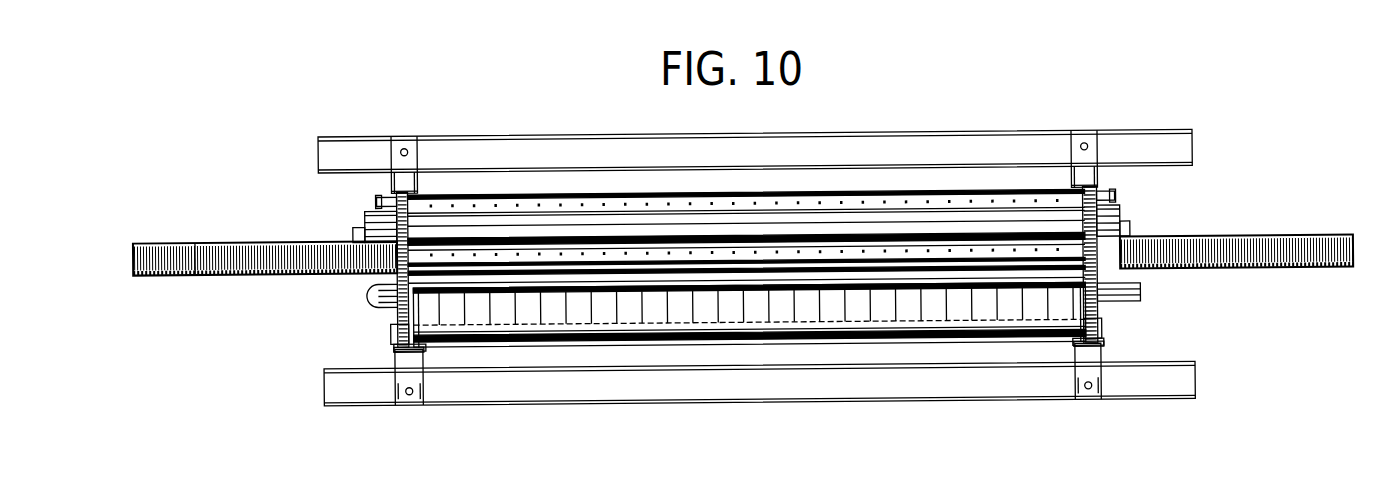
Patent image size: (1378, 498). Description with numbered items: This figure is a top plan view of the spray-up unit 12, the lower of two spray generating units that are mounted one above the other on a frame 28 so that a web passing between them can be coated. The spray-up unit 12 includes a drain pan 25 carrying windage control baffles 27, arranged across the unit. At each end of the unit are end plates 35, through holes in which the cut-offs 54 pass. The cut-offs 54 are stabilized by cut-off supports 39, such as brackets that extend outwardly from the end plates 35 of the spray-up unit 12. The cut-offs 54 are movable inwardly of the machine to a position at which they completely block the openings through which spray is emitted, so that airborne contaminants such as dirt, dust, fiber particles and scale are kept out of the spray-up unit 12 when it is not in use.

The spray-up unit 12 is at (1062, 84).
The drain pan 25 is at (488, 338).
The windage control baffles 27 is at (617, 315).
The frame 28 is at (897, 140).
The end plates 35 is at (392, 325).
The cut-off supports 39 is at (230, 277).
The cut-offs 54 is at (176, 226).